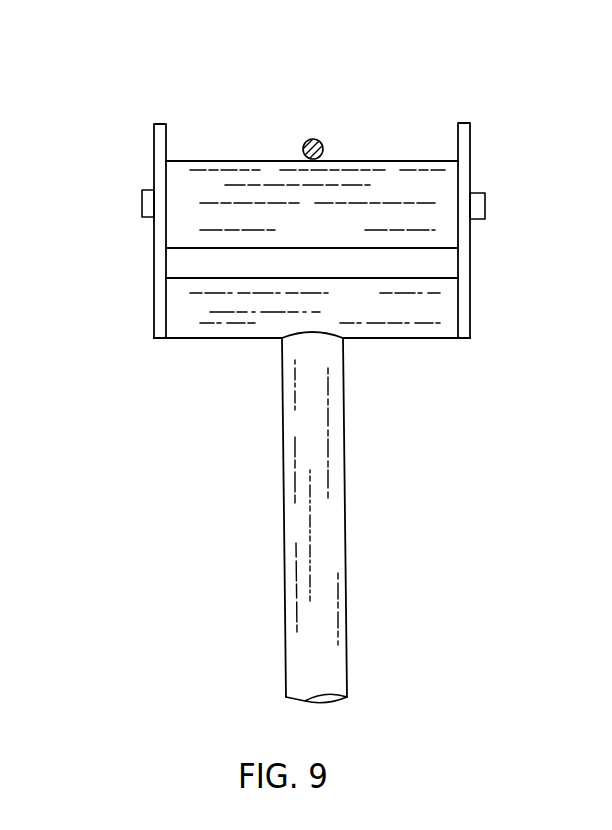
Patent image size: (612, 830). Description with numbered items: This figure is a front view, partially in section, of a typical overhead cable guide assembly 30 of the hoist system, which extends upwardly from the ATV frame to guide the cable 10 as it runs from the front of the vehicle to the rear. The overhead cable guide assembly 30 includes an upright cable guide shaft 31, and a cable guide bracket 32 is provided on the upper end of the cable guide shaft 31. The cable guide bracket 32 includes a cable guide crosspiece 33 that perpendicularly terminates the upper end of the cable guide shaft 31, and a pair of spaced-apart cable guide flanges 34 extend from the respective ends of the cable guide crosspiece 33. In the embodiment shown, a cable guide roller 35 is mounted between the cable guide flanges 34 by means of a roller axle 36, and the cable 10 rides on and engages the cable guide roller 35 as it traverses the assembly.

The overhead cable guide assembly 30 is at (124, 98).
The cable guide shaft 31 is at (297, 512).
The cable guide bracket 32 is at (143, 160).
The cable guide crosspiece 33 is at (246, 332).
The cable guide flanges 34 is at (157, 262).
The cable guide roller 35 is at (243, 172).
The roller axle 36 is at (140, 200).
The cable 10 is at (322, 142).